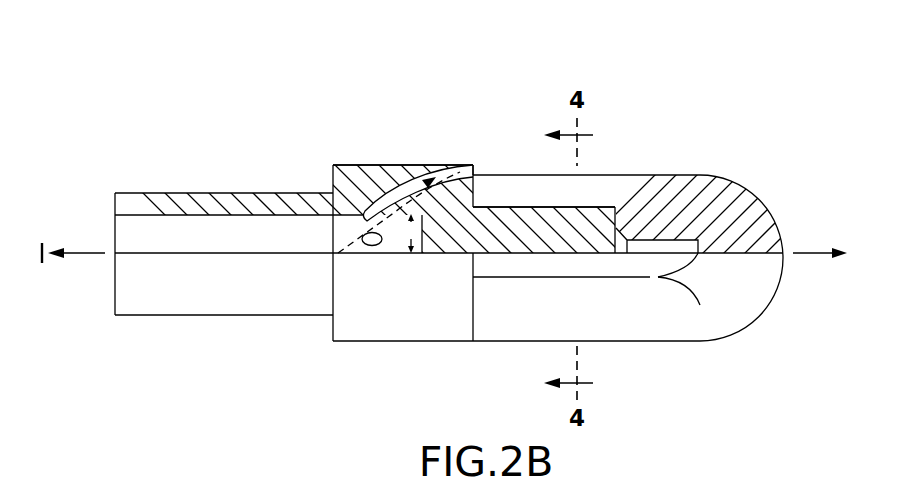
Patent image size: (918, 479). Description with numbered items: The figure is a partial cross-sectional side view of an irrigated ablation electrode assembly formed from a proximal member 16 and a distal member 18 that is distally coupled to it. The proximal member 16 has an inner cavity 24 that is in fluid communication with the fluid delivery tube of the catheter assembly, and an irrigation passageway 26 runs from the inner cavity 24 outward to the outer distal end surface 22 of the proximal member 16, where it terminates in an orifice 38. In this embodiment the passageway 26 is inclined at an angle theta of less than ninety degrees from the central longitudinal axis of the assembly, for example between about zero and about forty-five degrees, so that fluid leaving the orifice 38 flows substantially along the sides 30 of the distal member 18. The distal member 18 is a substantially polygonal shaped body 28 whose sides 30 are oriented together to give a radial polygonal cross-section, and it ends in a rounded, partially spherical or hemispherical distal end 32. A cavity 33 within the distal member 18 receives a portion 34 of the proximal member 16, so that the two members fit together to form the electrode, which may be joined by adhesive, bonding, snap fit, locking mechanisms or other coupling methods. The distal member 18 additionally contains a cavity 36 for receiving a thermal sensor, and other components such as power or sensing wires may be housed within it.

The proximal member 16 is at (336, 118).
The distal member 18 is at (705, 145).
The outer distal end surface 22 is at (488, 150).
The inner cavity 24 is at (205, 233).
The irrigation passageway 26 is at (410, 167).
The substantially polygonal shaped body 28 is at (655, 176).
The sides 30 is at (622, 332).
The rounded distal end 32 is at (787, 240).
The cavity 33 is at (605, 207).
The portion of proximal member 34 is at (480, 253).
The cavity for thermal sensor 36 is at (680, 235).
The orifice 38 is at (474, 168).